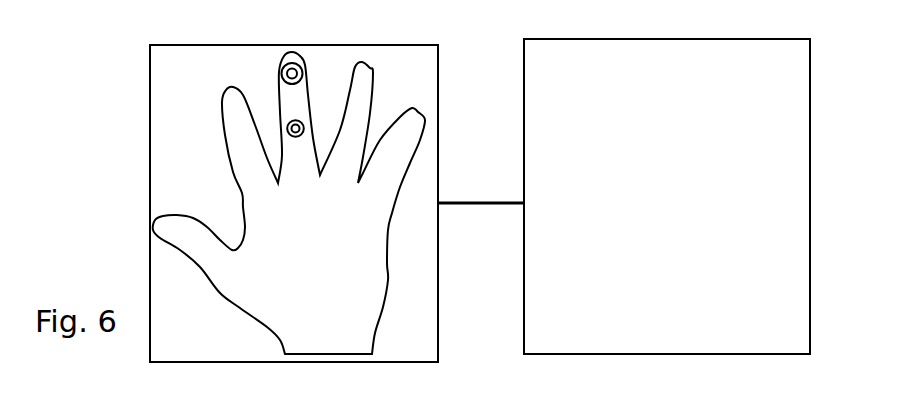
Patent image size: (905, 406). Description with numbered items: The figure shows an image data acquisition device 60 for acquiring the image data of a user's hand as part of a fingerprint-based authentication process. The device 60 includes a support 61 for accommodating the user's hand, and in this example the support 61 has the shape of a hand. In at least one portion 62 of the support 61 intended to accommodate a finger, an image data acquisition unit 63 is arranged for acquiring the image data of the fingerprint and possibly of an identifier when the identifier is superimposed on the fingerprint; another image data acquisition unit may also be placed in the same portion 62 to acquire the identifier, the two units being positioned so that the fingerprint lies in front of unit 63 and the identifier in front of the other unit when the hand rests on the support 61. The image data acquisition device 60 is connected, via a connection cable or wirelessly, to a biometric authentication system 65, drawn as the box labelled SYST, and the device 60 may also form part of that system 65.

The image data acquisition device 60 is at (438, 128).
The support 61 is at (372, 257).
The portion of the support 62 is at (302, 100).
The image data acquisition unit 63 is at (282, 75).
The biometric authentication system 65 is at (524, 72).
The system SYST is at (667, 196).